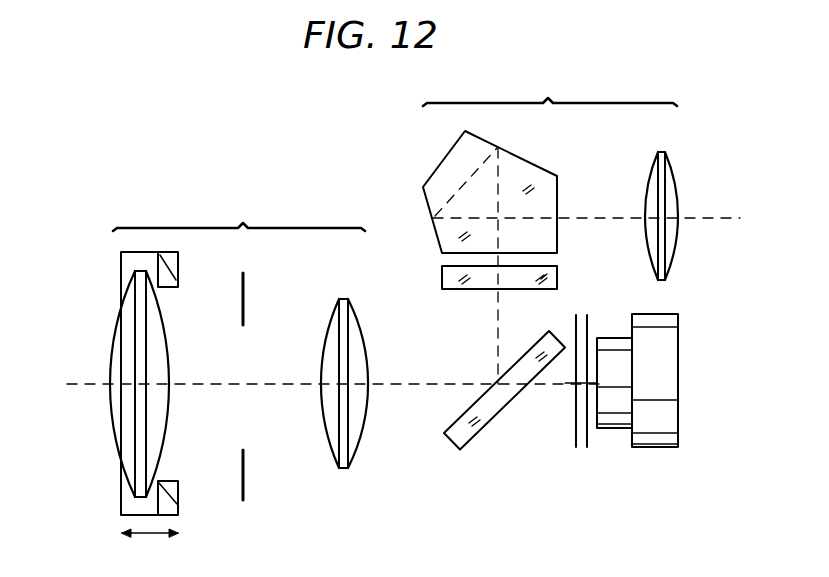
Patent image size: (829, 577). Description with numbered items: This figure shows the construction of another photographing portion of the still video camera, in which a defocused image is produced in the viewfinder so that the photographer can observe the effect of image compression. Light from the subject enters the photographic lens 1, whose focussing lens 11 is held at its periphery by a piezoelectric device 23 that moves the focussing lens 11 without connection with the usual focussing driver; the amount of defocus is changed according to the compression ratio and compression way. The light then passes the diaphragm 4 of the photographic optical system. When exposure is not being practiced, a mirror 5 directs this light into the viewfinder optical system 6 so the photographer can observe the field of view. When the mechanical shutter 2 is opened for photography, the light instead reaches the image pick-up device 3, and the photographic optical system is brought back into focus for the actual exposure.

The photographic lens 1 is at (239, 208).
The focusing lens 11 is at (114, 423).
The piezoelectric device 23 is at (178, 497).
The diaphragm 4 is at (243, 473).
The mirror 5 is at (472, 443).
The viewfinder optical system 6 is at (550, 178).
The mechanical shutter 2 is at (587, 447).
The image pick-up device 3 is at (678, 445).